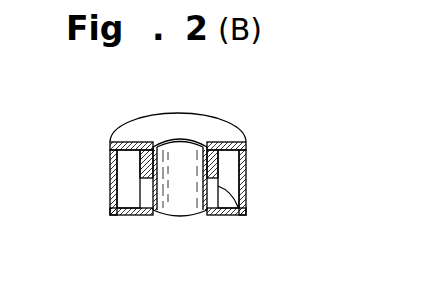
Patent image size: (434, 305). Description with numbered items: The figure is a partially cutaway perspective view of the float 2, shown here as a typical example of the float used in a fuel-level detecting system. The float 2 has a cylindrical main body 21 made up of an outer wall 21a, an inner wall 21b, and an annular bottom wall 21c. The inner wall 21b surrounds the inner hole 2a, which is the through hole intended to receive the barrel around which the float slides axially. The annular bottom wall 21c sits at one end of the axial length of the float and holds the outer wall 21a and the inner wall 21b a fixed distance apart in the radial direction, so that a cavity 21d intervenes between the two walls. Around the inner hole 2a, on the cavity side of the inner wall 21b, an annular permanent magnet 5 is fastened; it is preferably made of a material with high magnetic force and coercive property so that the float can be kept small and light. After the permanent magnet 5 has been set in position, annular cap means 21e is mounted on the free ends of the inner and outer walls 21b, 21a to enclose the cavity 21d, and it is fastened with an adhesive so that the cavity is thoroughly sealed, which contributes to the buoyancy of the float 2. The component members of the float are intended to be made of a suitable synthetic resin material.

The annular float 2 is at (243, 113).
The inner hole 2a is at (182, 193).
The annular permanent magnet 5 is at (140, 162).
The cylindrical main body 21 is at (248, 203).
The outer wall 21a is at (244, 171).
The inner wall 21b is at (143, 198).
The annular bottom wall 21c is at (223, 213).
The cavity 21d is at (140, 185).
The annular cap means 21e is at (135, 128).